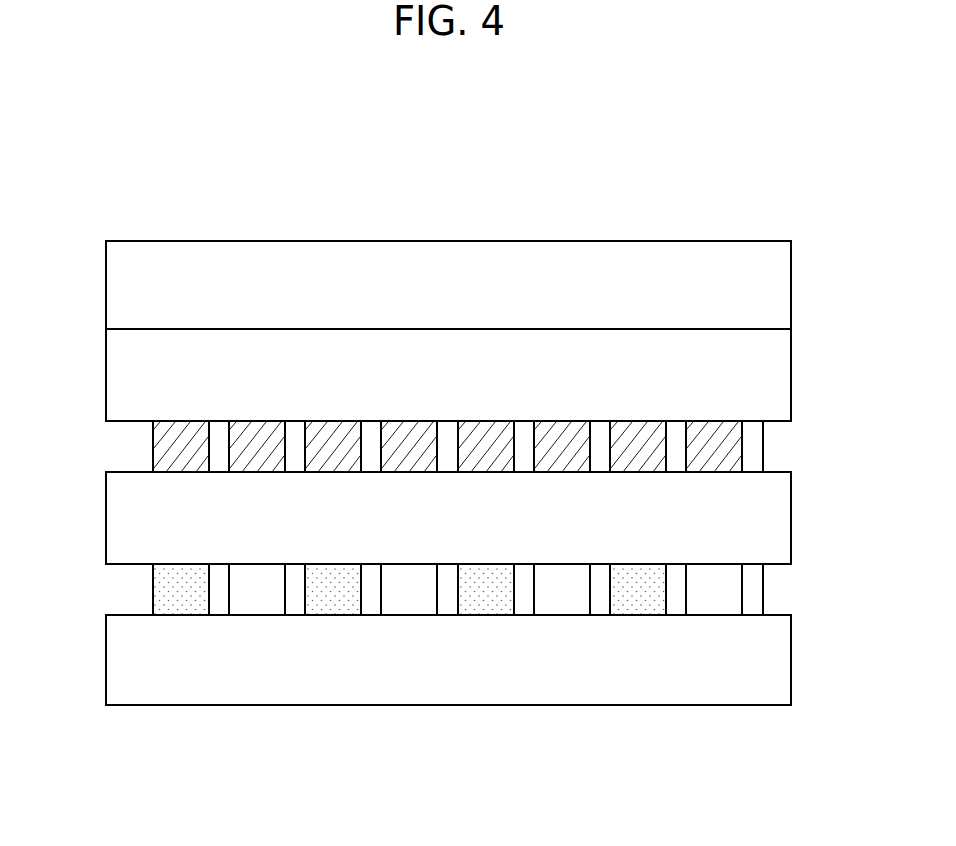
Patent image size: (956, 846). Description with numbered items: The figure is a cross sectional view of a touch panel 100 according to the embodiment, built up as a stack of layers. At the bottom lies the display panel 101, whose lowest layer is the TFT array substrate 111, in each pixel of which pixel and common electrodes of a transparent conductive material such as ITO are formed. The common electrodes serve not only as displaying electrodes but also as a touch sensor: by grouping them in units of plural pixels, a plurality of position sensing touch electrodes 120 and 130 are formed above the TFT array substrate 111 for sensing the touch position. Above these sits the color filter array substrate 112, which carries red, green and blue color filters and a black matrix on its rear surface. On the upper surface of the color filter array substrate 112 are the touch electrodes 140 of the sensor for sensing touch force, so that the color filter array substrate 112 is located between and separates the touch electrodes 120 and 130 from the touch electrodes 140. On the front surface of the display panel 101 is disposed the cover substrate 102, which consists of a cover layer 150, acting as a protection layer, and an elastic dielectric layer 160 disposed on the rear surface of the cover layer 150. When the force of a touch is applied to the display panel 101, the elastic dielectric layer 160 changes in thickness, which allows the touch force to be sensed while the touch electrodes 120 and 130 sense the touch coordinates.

The touch panel 100 is at (463, 155).
The display panel 101 is at (803, 422).
The cover substrate 102 is at (803, 241).
The TFT array substrate 111 is at (106, 659).
The color filter array substrate 112 is at (106, 519).
The position sensing touch electrode 120 is at (182, 589).
The position sensing touch electrode 130 is at (259, 589).
The touch electrode 140 is at (158, 448).
The cover layer 150 is at (106, 287).
The elastic dielectric layer 160 is at (106, 377).